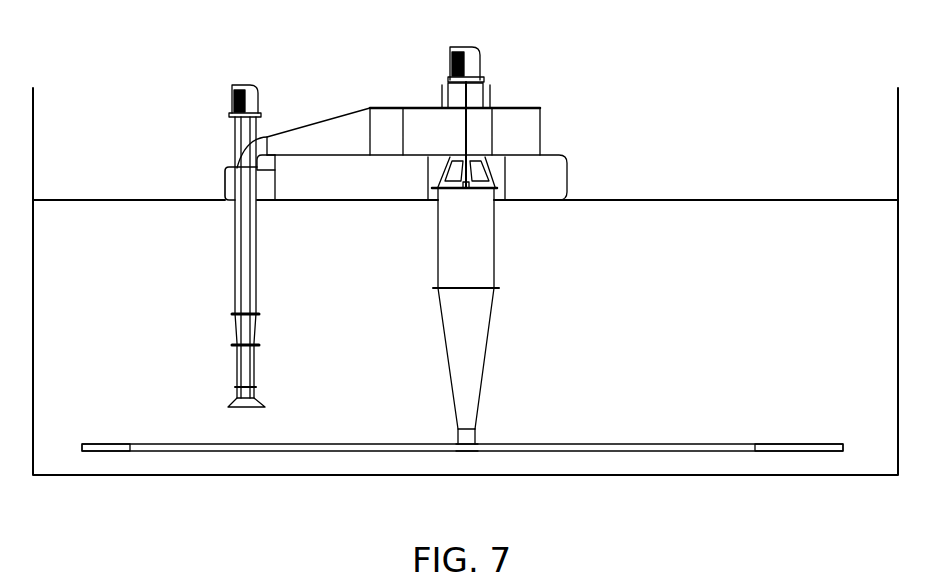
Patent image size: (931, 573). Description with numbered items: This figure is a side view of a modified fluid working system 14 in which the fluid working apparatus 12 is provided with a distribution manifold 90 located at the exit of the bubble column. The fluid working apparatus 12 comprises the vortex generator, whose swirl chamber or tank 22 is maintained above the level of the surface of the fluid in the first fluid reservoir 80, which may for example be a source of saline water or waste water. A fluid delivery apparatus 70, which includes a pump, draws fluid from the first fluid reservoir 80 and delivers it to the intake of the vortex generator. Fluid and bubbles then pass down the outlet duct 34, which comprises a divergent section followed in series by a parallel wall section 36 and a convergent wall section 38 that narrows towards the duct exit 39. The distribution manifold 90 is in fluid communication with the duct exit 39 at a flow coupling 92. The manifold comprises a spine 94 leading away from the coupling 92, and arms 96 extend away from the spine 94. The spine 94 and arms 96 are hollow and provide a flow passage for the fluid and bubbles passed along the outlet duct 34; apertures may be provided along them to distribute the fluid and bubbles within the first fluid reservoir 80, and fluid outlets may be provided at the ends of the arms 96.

The fluid working apparatus 12 is at (436, 227).
The fluid working system 14 is at (197, 209).
The swirl chamber/tank 22 is at (540, 128).
The outlet duct 34 is at (467, 316).
The parallel wall section 36 is at (495, 264).
The convergent wall section 38 is at (486, 345).
The duct exit 39 is at (458, 432).
The fluid delivery apparatus 70 is at (233, 133).
The first fluid reservoir 80 is at (117, 213).
The distribution manifold 90 is at (600, 444).
The flow coupling 92 is at (468, 438).
The spine 94 is at (465, 451).
The arms 96 is at (130, 444).